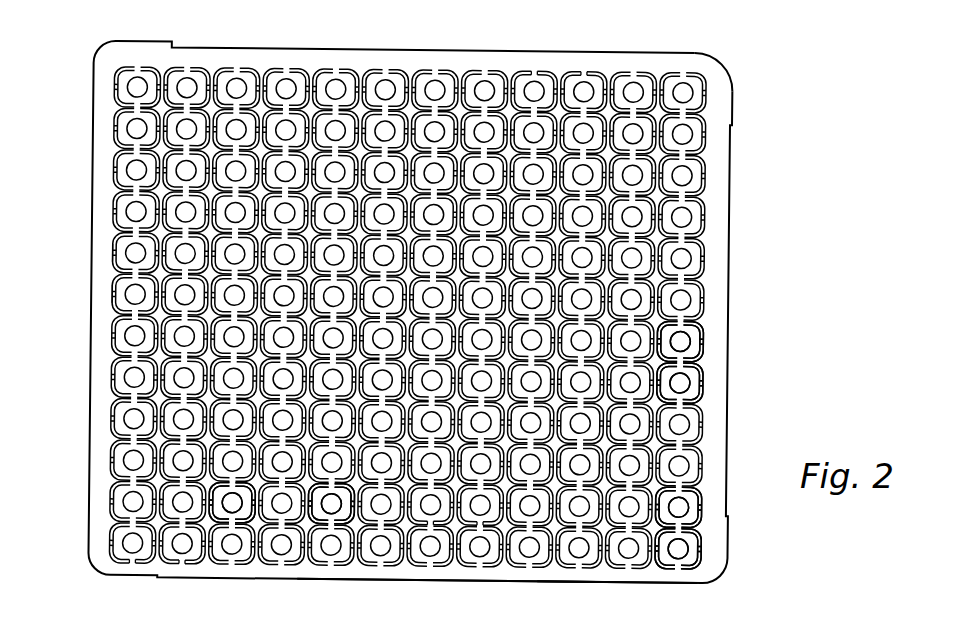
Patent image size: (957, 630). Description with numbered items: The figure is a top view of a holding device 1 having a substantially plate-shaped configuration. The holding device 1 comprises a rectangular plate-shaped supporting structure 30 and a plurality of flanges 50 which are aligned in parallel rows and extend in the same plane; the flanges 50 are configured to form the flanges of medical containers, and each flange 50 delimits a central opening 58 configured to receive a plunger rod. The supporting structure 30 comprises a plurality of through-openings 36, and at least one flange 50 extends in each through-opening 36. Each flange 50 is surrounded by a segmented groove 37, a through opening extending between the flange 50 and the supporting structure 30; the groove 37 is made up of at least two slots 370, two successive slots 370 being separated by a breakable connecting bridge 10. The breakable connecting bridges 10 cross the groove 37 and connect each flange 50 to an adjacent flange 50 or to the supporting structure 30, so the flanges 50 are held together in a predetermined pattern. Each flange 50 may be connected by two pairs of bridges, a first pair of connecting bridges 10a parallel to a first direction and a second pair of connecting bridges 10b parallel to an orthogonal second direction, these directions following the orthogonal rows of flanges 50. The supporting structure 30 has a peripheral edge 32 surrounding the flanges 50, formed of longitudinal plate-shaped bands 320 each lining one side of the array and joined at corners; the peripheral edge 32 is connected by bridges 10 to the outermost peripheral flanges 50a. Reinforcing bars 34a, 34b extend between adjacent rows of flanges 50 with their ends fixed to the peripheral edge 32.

The holding device 1 is at (441, 314).
The breakable connecting bridges 10 is at (693, 199).
The first pair of connecting bridges 10a is at (333, 520).
The second pair of connecting bridges 10b is at (312, 527).
The supporting structure 30 is at (730, 233).
The peripheral edge 32 is at (565, 578).
The plate-shaped bands 320 is at (560, 612).
The slot between receptacles (first) 34a is at (455, 508).
The slot between receptacles (second) 34b is at (212, 548).
The through-openings 36 is at (117, 285).
The segmented groove 37 is at (584, 73).
The slots 370 is at (705, 88).
The flanges 50 is at (700, 392).
The peripheral flanges 50a is at (688, 348).
The central opening 58 is at (680, 550).